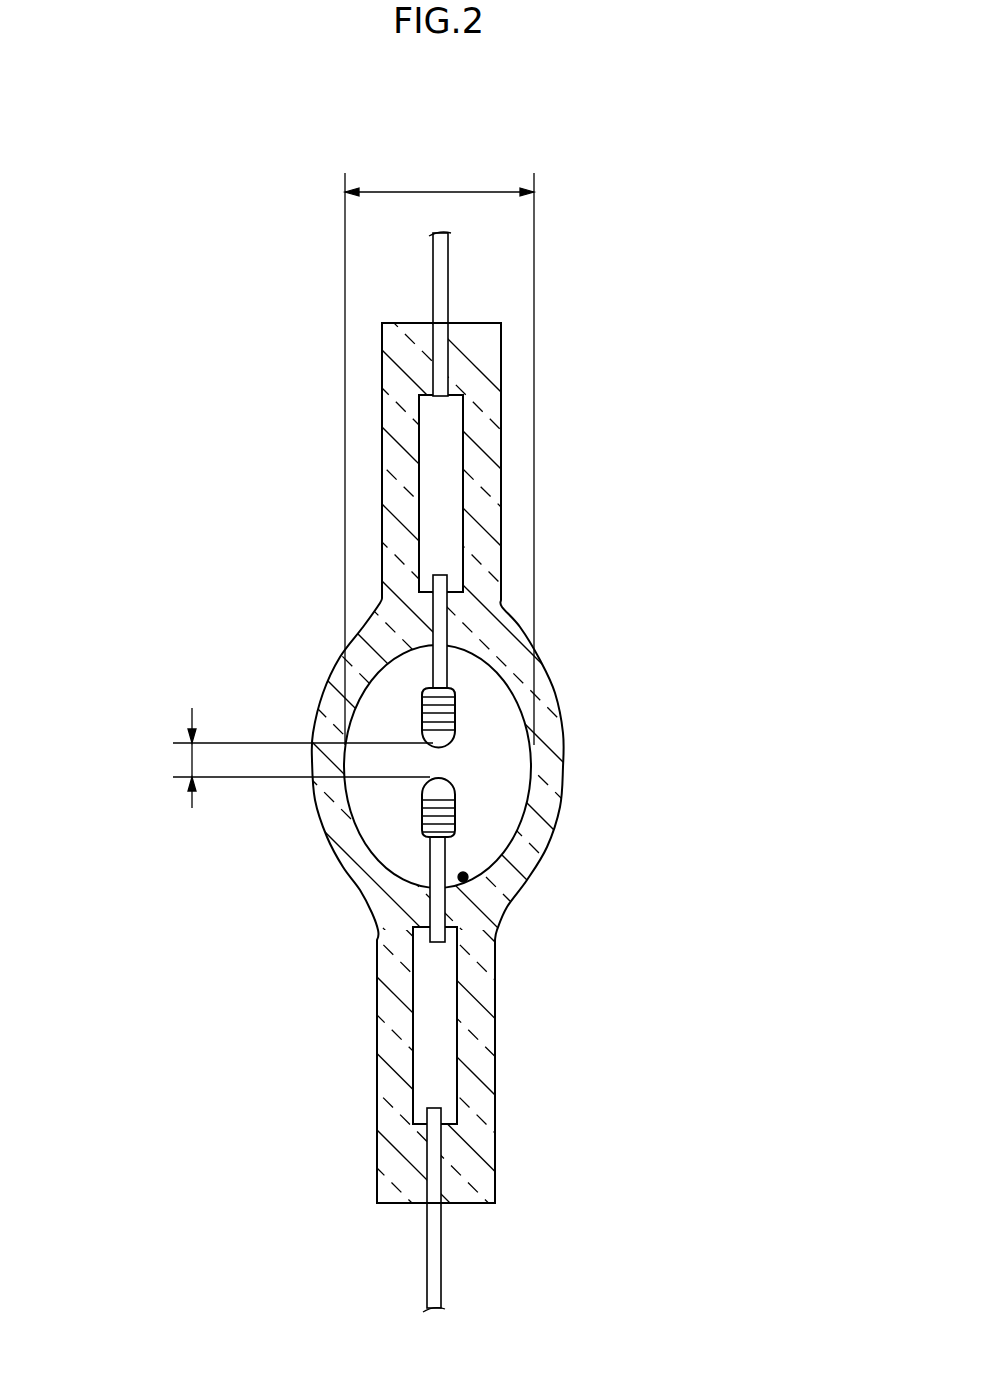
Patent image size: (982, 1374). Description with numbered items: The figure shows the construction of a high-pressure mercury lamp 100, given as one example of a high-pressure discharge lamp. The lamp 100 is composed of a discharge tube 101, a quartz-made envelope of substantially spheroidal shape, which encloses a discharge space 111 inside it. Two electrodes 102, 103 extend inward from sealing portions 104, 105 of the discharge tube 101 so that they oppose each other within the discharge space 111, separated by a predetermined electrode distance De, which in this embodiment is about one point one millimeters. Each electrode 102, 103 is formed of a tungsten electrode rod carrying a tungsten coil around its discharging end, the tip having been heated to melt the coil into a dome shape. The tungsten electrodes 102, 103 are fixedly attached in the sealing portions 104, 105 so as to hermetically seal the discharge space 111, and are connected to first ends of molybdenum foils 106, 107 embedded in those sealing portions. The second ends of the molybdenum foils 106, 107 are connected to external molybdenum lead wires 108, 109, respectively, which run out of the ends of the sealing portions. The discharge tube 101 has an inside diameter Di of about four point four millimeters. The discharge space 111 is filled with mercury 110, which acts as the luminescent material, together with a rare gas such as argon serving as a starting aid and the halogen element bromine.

The high-pressure mercury lamp 100 is at (202, 144).
The discharge tube 101 is at (347, 697).
The electrode 102 is at (455, 708).
The electrode 103 is at (455, 823).
The sealing portion 104 is at (463, 628).
The sealing portion 105 is at (385, 893).
The molybdenum foil 106 is at (448, 523).
The molybdenum foil 107 is at (435, 1052).
The external molybdenum lead wire 108 is at (443, 290).
The external molybdenum lead wire 109 is at (442, 1272).
The mercury 110 is at (467, 877).
The discharge space 111 is at (514, 766).